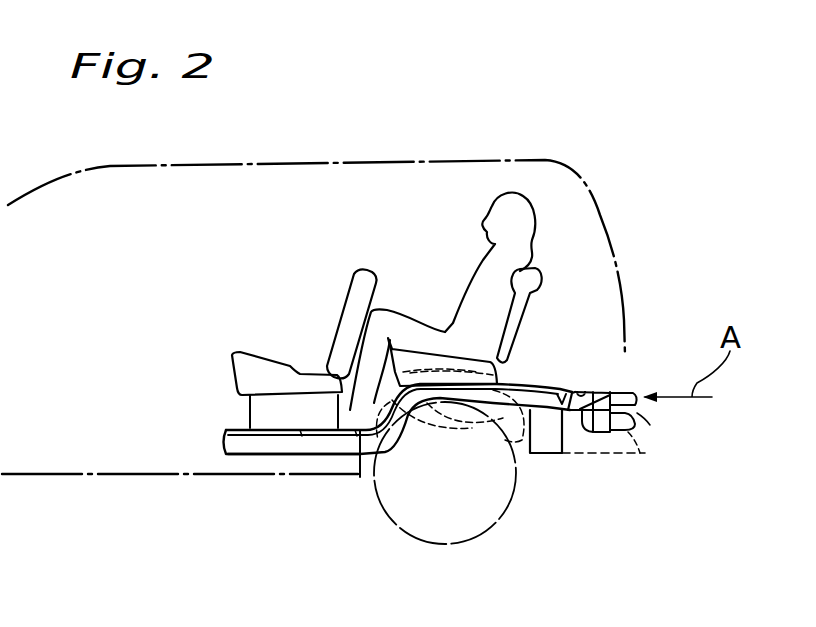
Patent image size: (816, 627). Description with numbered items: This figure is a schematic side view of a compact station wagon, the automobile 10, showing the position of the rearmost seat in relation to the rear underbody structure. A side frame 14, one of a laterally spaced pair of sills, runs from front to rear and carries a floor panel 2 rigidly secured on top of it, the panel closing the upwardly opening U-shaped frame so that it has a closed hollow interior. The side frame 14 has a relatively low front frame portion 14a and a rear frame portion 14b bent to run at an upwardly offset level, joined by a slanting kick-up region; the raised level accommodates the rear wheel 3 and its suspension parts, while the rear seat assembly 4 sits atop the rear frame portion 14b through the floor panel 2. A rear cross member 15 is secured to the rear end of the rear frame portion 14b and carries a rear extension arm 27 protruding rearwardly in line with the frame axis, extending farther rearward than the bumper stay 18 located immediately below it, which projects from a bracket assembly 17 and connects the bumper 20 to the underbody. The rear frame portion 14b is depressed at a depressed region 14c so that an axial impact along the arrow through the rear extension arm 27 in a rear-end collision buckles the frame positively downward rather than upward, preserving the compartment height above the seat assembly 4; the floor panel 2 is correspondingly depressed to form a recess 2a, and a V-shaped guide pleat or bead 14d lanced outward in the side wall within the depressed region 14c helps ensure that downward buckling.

The floor panel 2 is at (240, 427).
The recess 2a is at (570, 386).
The rear wheel 3 is at (502, 518).
The rear seat assembly 4 is at (418, 360).
The automobile 10 is at (540, 217).
The side frame 14 is at (272, 443).
The front frame portion 14a is at (323, 447).
The rear frame portion 14b is at (490, 403).
The depressed region 14c is at (577, 383).
The guide pleat or bead 14d is at (566, 453).
The rear cross member 15 is at (593, 390).
The bracket assembly 17 is at (598, 428).
The bumper stay 18 is at (620, 425).
The bumper 20 is at (637, 413).
The rear extension arm 27 is at (630, 386).